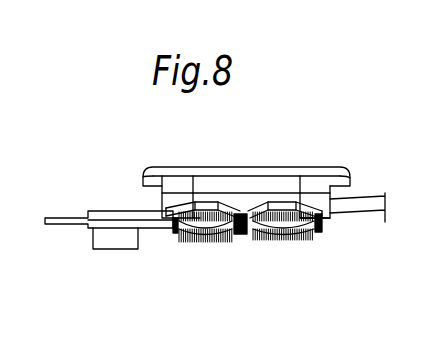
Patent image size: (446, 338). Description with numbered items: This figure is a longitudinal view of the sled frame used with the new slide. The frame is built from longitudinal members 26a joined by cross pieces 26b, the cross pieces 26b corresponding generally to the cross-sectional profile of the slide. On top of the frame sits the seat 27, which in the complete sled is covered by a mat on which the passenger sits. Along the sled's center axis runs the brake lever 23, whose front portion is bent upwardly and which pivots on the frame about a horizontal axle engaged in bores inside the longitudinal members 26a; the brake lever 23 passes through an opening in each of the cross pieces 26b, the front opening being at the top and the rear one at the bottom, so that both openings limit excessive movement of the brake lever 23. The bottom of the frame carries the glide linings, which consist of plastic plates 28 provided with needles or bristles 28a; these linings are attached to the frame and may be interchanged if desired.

The brake lever 23 is at (372, 203).
The longitudinal members 26a is at (262, 192).
The cross pieces 26b is at (183, 181).
The seat 27 is at (338, 178).
The plastic plates 28 is at (232, 222).
The needles or bristles 28a is at (290, 232).